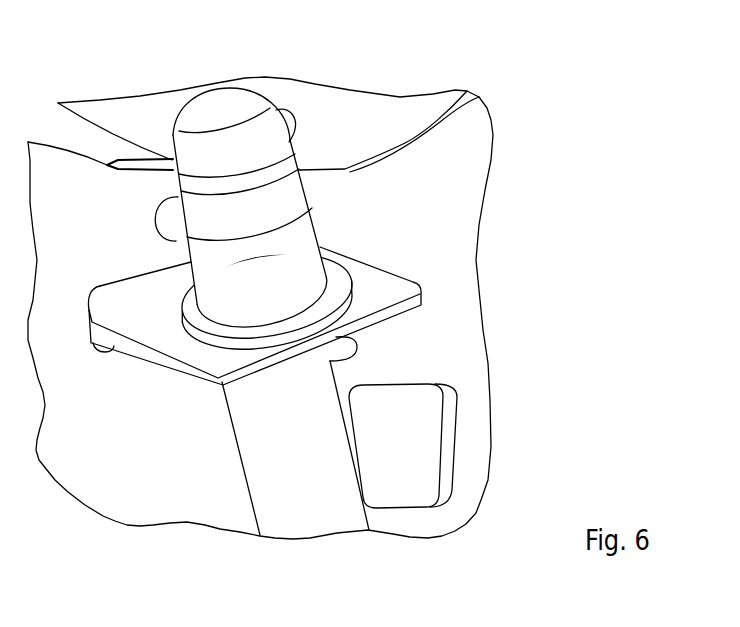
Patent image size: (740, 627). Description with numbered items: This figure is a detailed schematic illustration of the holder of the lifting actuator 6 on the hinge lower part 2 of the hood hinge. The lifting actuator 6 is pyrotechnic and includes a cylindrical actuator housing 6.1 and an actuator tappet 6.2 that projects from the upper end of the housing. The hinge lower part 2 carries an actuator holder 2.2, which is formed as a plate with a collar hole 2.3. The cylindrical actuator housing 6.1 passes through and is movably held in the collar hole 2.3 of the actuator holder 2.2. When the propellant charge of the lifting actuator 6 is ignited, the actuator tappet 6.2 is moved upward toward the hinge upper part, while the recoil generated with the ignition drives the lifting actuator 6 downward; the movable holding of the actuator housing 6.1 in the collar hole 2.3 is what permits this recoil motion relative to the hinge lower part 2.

The hinge lower part 2 is at (115, 428).
The actuator holder 2.2 is at (426, 288).
The collar hole 2.3 is at (326, 273).
The lifting actuator 6 is at (324, 241).
The actuator housing 6.1 is at (253, 422).
The actuator tappet 6.2 is at (218, 103).